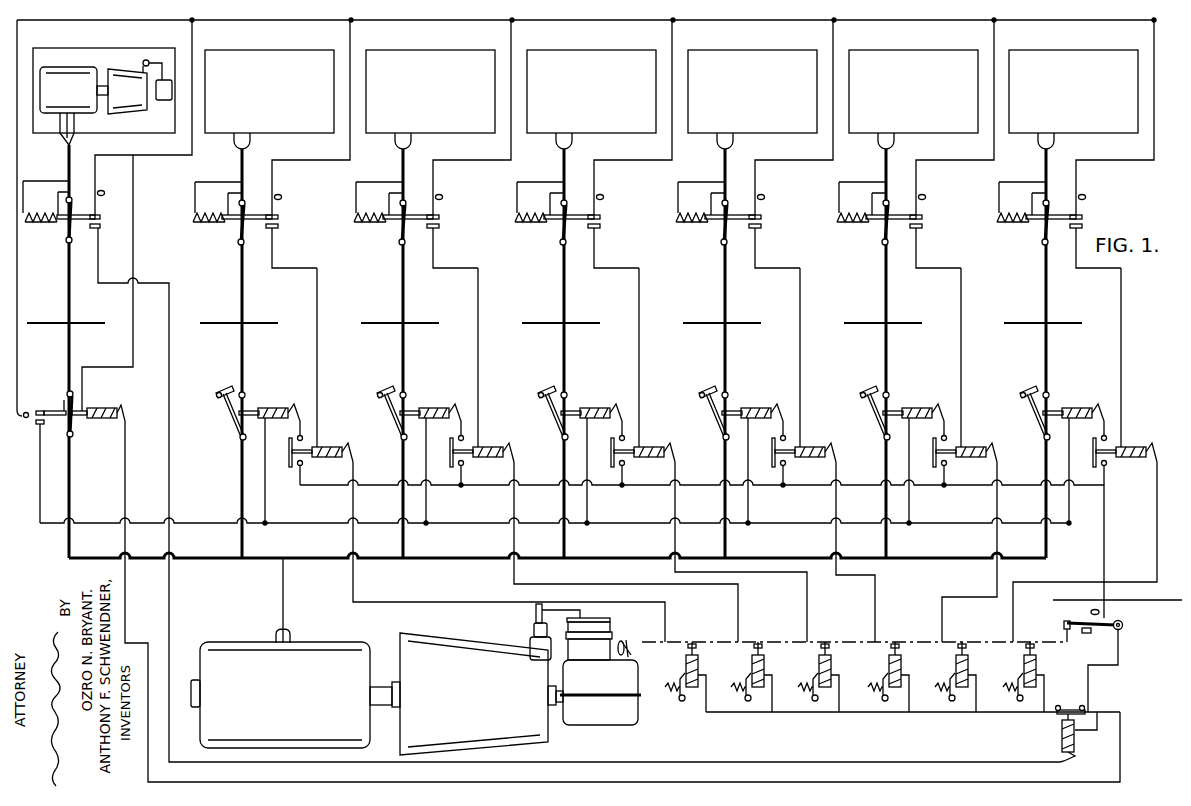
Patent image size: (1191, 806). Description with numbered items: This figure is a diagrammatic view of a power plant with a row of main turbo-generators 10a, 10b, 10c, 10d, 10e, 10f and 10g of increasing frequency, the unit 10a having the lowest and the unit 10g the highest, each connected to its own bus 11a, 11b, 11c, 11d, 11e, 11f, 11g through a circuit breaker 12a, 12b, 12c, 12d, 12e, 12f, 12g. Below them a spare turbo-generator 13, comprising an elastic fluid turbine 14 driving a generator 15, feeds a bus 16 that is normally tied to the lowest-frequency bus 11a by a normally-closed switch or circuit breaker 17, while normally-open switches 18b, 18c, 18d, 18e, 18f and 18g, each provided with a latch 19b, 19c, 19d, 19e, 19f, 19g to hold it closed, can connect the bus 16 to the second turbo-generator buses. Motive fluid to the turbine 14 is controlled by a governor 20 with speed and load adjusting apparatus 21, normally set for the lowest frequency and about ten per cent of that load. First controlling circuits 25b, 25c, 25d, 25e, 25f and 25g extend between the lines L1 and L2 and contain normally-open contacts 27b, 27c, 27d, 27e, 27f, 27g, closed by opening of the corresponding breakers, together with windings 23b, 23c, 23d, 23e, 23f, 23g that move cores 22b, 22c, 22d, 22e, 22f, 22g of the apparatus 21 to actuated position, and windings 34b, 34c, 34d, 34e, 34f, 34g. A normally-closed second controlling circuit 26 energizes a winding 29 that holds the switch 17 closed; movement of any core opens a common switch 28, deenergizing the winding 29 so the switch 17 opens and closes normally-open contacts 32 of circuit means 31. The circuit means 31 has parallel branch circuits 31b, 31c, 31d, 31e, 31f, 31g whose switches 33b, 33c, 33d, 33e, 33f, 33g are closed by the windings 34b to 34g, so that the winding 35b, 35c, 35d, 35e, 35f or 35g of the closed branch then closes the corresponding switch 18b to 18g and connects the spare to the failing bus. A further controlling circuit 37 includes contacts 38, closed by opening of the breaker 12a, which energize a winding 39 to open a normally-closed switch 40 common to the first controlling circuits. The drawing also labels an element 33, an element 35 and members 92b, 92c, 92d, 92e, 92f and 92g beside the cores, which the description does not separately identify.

The line L1 is at (1141, 20).
The line L2 is at (1162, 600).
The main turbo-generator 10a is at (108, 58).
The main turbo-generator 10b is at (266, 56).
The main turbo-generator 10c is at (430, 90).
The main turbo-generator 10d is at (591, 90).
The main turbo-generator 10e is at (752, 90).
The main turbo-generator 10f is at (913, 90).
The main turbo-generator 10g is at (1073, 90).
The bus 11a is at (83, 322).
The bus 11b is at (262, 321).
The bus 11c is at (403, 309).
The bus 11d is at (565, 309).
The bus 11e is at (725, 309).
The bus 11f is at (885, 309).
The bus 11g is at (1047, 309).
The circuit breaker 12a is at (74, 200).
The circuit breaker 12b is at (247, 204).
The circuit breaker 12c is at (394, 211).
The circuit breaker 12d is at (556, 211).
The circuit breaker 12e is at (716, 211).
The circuit breaker 12f is at (876, 211).
The circuit breaker 12g is at (1038, 211).
The spare turbo-generator 13 is at (388, 636).
The elastic fluid turbine 14 is at (470, 650).
The generator 15 is at (322, 652).
The bus 16 is at (304, 562).
The normally-closed switch or circuit breaker 17 is at (66, 396).
The normally-open switch 18b is at (246, 396).
The normally-open switch 18c is at (424, 388).
The normally-open switch 18d is at (586, 388).
The normally-open switch 18e is at (746, 388).
The normally-open switch 18f is at (906, 388).
The normally-open switch 18g is at (1068, 388).
The latch 19b is at (224, 389).
The latch 19c is at (380, 402).
The latch 19d is at (541, 402).
The latch 19e is at (702, 402).
The latch 19f is at (863, 402).
The latch 19g is at (1023, 402).
The governor 20 is at (606, 628).
The speed and load adjusting apparatus 21 is at (640, 638).
The core 22b is at (699, 677).
The core 22c is at (765, 677).
The core 22d is at (832, 677).
The core 22e is at (902, 677).
The core 22f is at (969, 677).
The core 22g is at (1037, 677).
The winding 23b is at (698, 662).
The winding 23c is at (764, 662).
The winding 23d is at (831, 662).
The winding 23e is at (901, 662).
The winding 23f is at (968, 662).
The winding 23g is at (1036, 662).
The first controlling circuit 25b is at (318, 290).
The first controlling circuit 25c is at (497, 357).
The first controlling circuit 25d is at (659, 357).
The first controlling circuit 25e is at (819, 357).
The first controlling circuit 25f is at (979, 357).
The first controlling circuit 25g is at (1141, 357).
The second controlling circuit 26 is at (137, 333).
The normally-open contact 27b is at (281, 224).
The normally-open contact 27c is at (456, 241).
The normally-open contact 27d is at (618, 241).
The normally-open contact 27e is at (778, 241).
The normally-open contact 27f is at (938, 241).
The normally-open contact 27g is at (1100, 238).
The common switch 28 is at (1092, 634).
The winding 29 is at (120, 405).
The circuit means 31 is at (18, 263).
The parallel branch circuit 31b is at (267, 508).
The parallel branch circuit 31c is at (446, 471).
The parallel branch circuit 31d is at (608, 471).
The parallel branch circuit 31e is at (768, 471).
The parallel branch circuit 31f is at (928, 471).
The parallel branch circuit 31g is at (1090, 471).
The normally-open contacts 32 is at (37, 410).
The conductor 33 is at (135, 249).
The switch 33b is at (288, 453).
The switch 33c is at (450, 460).
The switch 33d is at (611, 460).
The switch 33e is at (772, 460).
The switch 33f is at (933, 460).
The switch 33g is at (1093, 460).
The winding 34b is at (330, 445).
The winding 34c is at (499, 437).
The winding 34d is at (661, 437).
The winding 34e is at (821, 437).
The winding 34f is at (981, 437).
The winding 34g is at (1143, 437).
The holding coil 35 is at (108, 419).
The winding 35b is at (279, 407).
The winding 35c is at (446, 410).
The winding 35d is at (608, 410).
The winding 35e is at (768, 410).
The winding 35f is at (928, 410).
The winding 35g is at (1090, 410).
The controlling circuit 37 is at (170, 297).
The contacts 38 is at (99, 221).
The winding 39 is at (1061, 735).
The normally-closed switch 40 is at (1075, 708).
The latch 92b is at (688, 705).
The latch 92c is at (748, 699).
The latch 92d is at (815, 699).
The latch 92e is at (885, 699).
The latch 92f is at (952, 699).
The latch 92g is at (1020, 699).